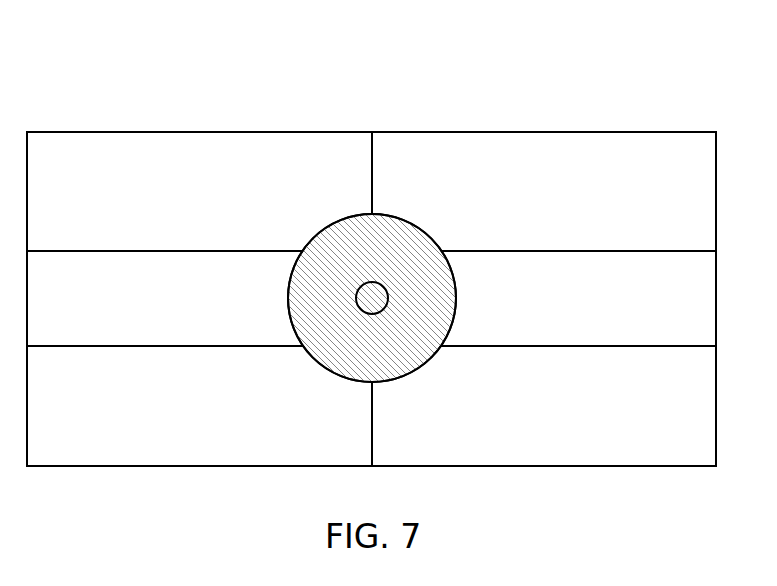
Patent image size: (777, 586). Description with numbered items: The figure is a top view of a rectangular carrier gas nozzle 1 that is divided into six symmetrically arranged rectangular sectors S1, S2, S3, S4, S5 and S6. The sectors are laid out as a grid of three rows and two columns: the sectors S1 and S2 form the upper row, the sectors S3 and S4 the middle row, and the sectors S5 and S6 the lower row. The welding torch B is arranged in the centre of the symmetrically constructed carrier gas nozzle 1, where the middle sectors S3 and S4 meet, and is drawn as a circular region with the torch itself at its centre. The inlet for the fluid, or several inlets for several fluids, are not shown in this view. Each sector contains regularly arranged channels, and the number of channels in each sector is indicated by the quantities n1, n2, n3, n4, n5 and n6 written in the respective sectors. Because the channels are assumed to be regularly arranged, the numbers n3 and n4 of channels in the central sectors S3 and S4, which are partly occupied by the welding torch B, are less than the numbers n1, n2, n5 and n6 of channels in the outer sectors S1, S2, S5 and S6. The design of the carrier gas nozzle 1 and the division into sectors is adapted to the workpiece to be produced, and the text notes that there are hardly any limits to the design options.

The carrier gas nozzle 1 is at (657, 46).
The welding torch B is at (358, 298).
The sector S1 is at (199, 191).
The sector S2 is at (544, 191).
The sector S3 is at (199, 298).
The sector S4 is at (544, 298).
The sector S5 is at (199, 406).
The sector S6 is at (544, 406).
The number of channels n1 is at (199, 191).
The number of channels n2 is at (544, 191).
The number of channels n3 is at (199, 298).
The number of channels n4 is at (544, 298).
The number of channels n5 is at (199, 406).
The number of channels n6 is at (544, 406).